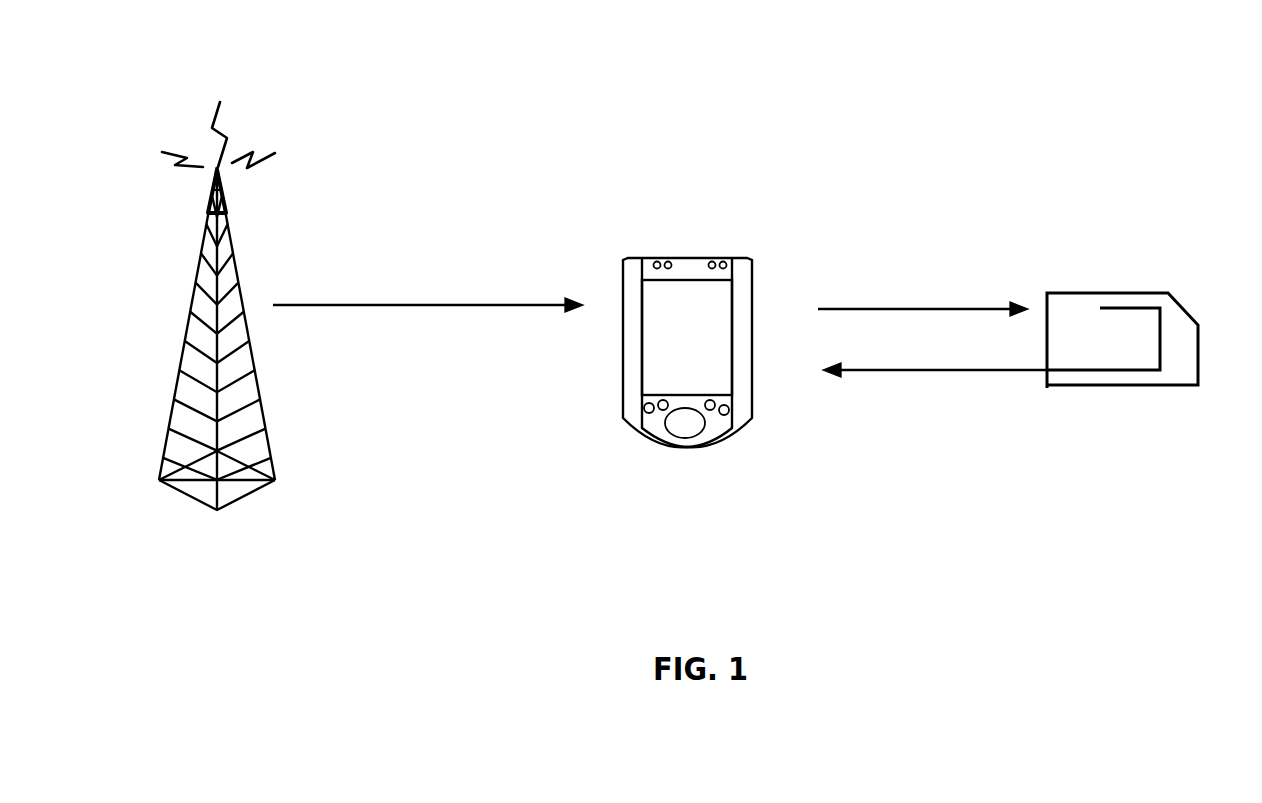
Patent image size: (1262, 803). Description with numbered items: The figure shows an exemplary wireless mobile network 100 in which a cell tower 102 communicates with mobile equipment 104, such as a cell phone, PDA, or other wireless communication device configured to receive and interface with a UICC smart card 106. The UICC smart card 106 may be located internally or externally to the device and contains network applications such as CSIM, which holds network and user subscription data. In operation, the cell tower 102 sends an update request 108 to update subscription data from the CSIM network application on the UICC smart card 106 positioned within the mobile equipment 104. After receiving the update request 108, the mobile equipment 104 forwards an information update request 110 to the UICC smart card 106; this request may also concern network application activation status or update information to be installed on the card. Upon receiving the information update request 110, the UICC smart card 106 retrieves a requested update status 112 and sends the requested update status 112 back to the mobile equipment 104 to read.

The wireless mobile network 100 is at (1132, 61).
The cell tower 102 is at (232, 502).
The mobile equipment 104 is at (688, 448).
The UICC smart card 106 is at (1170, 293).
The update request 108 is at (398, 306).
The information update request 110 is at (893, 307).
The requested update status 112 is at (907, 370).